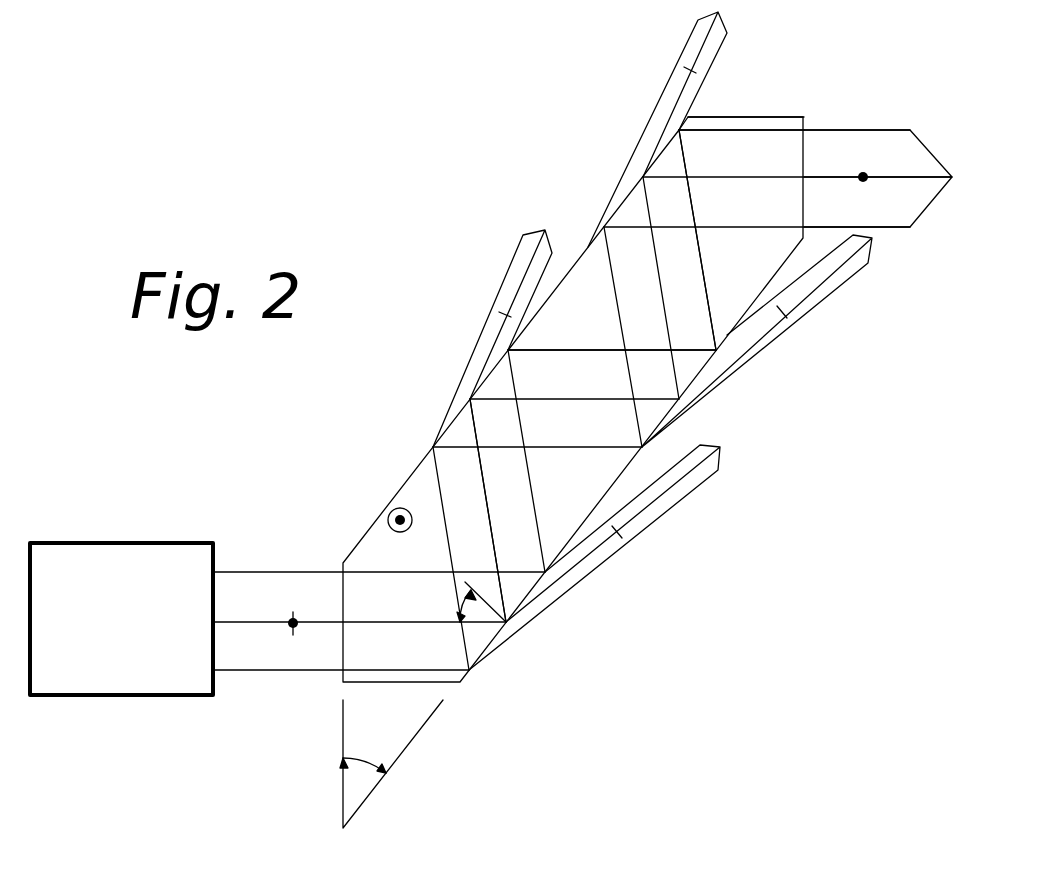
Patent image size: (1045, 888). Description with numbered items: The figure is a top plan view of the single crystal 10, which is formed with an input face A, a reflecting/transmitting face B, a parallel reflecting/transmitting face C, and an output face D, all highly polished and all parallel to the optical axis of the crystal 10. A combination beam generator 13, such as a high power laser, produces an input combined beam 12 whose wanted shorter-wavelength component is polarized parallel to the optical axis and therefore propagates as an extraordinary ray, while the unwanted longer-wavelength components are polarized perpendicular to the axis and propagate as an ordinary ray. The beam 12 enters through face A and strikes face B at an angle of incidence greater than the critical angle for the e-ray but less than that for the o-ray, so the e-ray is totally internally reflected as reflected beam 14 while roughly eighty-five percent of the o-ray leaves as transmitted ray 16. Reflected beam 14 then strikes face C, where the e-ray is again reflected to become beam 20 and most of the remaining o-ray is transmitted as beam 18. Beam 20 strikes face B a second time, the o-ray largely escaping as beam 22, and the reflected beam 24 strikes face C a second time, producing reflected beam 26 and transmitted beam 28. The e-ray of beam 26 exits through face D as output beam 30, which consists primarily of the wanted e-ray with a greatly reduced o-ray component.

The crystal 10 is at (427, 567).
The input combined beam 12 is at (255, 583).
The combination beam generator 13 is at (115, 551).
The reflected beam 14 is at (528, 507).
The transmitted ray 16 is at (687, 488).
The transmitted beam 18 is at (483, 343).
The reflected beam 20 is at (565, 348).
The transmitted beam 22 is at (800, 317).
The reflected beam 24 is at (702, 260).
The reflected beam 26 is at (723, 132).
The transmitted beam 28 is at (668, 78).
The output beam 30 is at (880, 152).